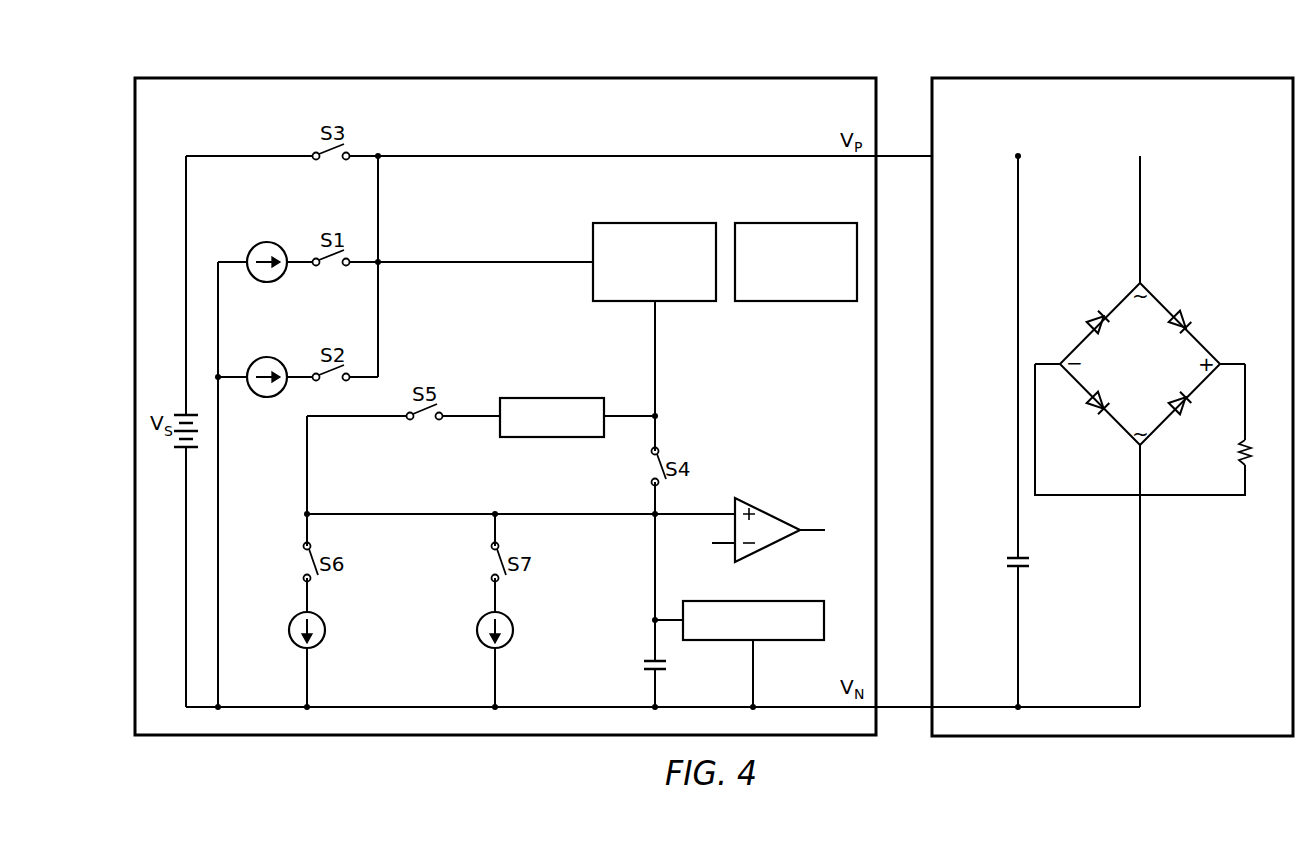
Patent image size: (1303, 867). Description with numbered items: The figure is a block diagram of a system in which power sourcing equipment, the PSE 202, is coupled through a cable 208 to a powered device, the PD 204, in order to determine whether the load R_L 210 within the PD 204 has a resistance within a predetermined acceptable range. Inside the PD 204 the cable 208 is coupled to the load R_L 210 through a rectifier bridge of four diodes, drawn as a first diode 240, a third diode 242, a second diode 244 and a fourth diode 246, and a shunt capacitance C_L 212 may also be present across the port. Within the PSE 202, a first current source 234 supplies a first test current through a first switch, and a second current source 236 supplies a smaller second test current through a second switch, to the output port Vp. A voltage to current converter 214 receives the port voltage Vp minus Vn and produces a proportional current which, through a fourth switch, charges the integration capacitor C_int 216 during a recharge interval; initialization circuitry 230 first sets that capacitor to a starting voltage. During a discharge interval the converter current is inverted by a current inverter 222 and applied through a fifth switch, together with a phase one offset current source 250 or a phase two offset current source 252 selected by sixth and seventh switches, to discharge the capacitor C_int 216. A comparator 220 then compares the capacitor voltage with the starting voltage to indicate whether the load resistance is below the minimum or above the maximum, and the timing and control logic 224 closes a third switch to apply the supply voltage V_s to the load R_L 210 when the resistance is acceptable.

The PSE 202 is at (457, 78).
The PD 204 is at (1178, 78).
The cable 208 is at (892, 153).
The load R_L 210 is at (1239, 455).
The shunt capacitance C_L 212 is at (1004, 563).
The voltage to current converter 214 is at (645, 222).
The integration capacitor C_int 216 is at (642, 664).
The comparator 220 is at (768, 548).
The current inverter 222 is at (549, 397).
The timing and control logic 224 is at (797, 222).
The initialization circuitry 230 is at (784, 641).
The first current source 234 is at (264, 281).
The current source I2 236 is at (266, 398).
The diode D1 240 is at (1182, 320).
The diode D3 242 is at (1097, 407).
The diode D2 244 is at (1181, 406).
The diode D4 246 is at (1102, 320).
The phase one offset current source 250 is at (288, 630).
The phase two offset current source 252 is at (476, 630).